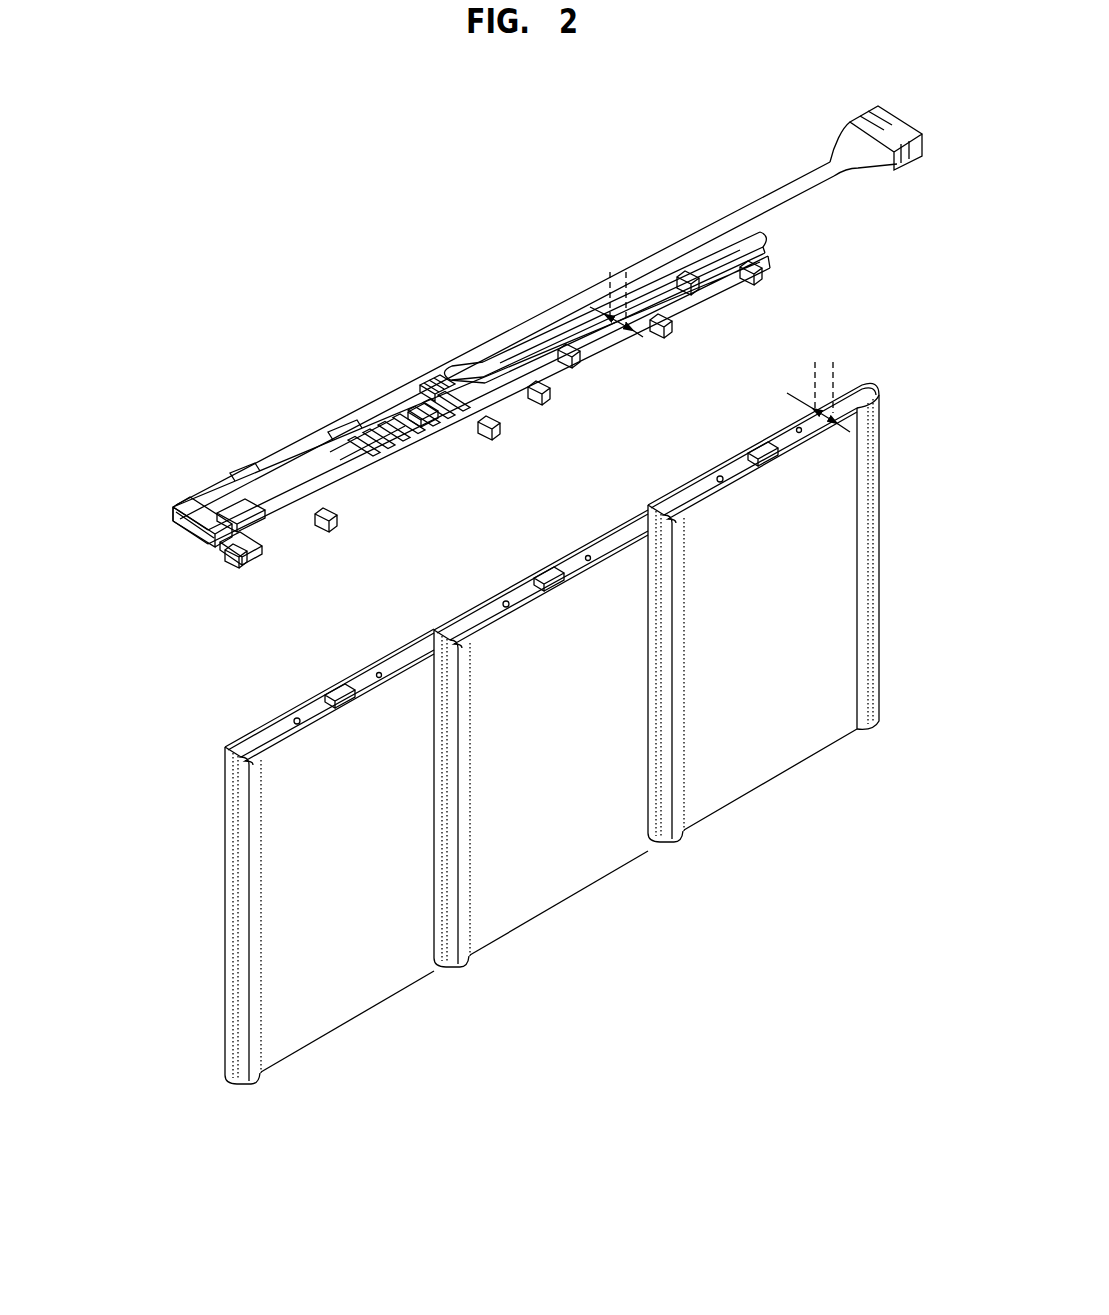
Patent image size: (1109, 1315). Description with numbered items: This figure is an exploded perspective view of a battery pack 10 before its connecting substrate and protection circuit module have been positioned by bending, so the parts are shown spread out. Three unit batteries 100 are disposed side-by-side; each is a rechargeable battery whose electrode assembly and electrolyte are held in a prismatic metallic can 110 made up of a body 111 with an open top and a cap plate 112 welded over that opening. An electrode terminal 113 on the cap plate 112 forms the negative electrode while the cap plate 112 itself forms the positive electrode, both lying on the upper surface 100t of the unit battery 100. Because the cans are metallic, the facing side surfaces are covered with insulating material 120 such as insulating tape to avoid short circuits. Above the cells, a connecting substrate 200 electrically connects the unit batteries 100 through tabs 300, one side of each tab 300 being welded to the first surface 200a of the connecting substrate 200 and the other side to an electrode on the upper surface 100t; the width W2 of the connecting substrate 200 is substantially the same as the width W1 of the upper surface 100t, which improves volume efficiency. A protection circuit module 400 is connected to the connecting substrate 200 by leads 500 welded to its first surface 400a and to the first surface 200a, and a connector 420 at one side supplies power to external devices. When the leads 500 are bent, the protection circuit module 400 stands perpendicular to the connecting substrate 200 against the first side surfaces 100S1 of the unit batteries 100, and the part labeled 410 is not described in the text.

The battery pack 10 is at (701, 103).
The unit battery 100 is at (518, 741).
The first side surface 100S1 is at (328, 1020).
The upper surface 100t is at (262, 722).
The can 110 is at (495, 734).
The body 111 is at (290, 888).
The cap plate 112 is at (243, 758).
The electrode terminal 113 is at (335, 689).
The insulating material 120 is at (262, 1079).
The connecting substrate 200 is at (463, 400).
The first surface of the connecting substrate 200a is at (582, 324).
The tab 300 is at (232, 560).
The protection circuit module 400 is at (260, 448).
The first surface of the protection circuit module 400a is at (348, 432).
The first connector 410 is at (180, 519).
The connector 420 is at (840, 150).
The lead 500 is at (416, 410).
The width of the upper surface W1 is at (818, 388).
The width of the connecting substrate W2 is at (616, 295).